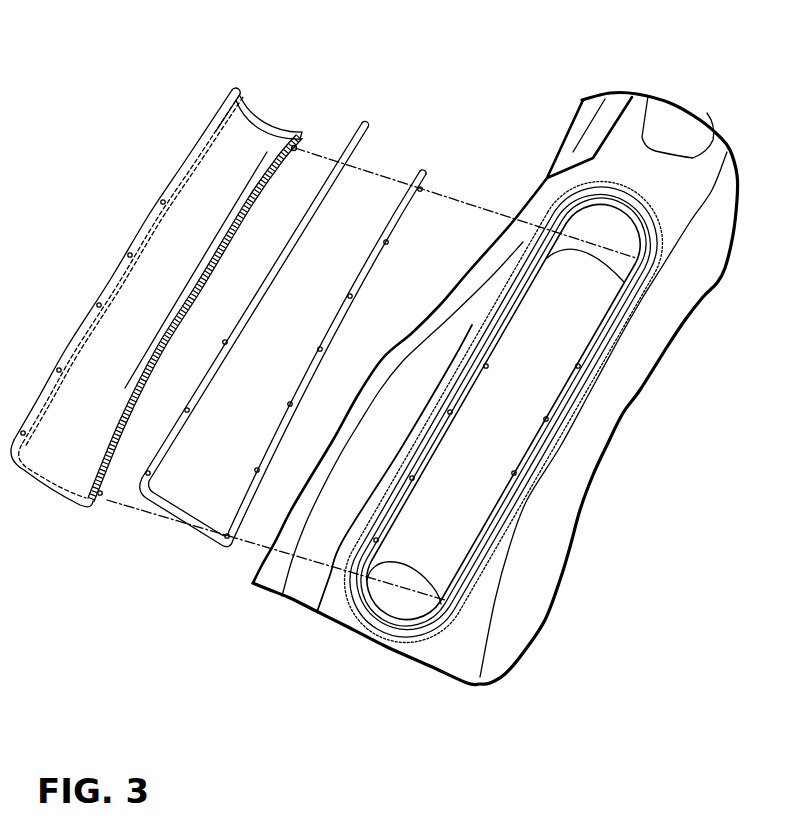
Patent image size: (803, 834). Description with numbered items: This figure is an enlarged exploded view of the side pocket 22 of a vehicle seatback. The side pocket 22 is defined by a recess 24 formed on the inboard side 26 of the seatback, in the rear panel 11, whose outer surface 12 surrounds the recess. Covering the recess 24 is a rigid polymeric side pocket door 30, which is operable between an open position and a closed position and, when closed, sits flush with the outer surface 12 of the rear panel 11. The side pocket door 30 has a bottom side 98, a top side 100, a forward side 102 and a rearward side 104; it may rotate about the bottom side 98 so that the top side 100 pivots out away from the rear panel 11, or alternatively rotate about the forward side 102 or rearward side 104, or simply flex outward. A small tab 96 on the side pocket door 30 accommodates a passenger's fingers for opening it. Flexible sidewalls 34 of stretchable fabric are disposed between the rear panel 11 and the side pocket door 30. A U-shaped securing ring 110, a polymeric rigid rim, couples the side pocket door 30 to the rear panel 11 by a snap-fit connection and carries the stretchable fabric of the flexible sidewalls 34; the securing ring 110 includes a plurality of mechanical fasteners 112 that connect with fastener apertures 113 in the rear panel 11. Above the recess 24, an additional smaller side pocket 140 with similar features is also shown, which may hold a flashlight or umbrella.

The rear panel 11 is at (680, 283).
The outer surface 12 is at (528, 563).
The side pocket 22 is at (392, 90).
The recess 24 is at (514, 374).
The inboard side 26 is at (673, 178).
The side pocket door 30 is at (113, 350).
The flexible sidewalls 34 is at (262, 187).
The tab 96 is at (252, 123).
The bottom side 98 is at (40, 488).
The top side 100 is at (280, 132).
The forward side 102 is at (146, 220).
The rearward side 104 is at (127, 412).
The U-shaped securing ring 110 is at (372, 137).
The mechanical fasteners 112 is at (352, 296).
The fastener apertures 113 is at (486, 367).
The smaller side pocket 140 is at (665, 130).